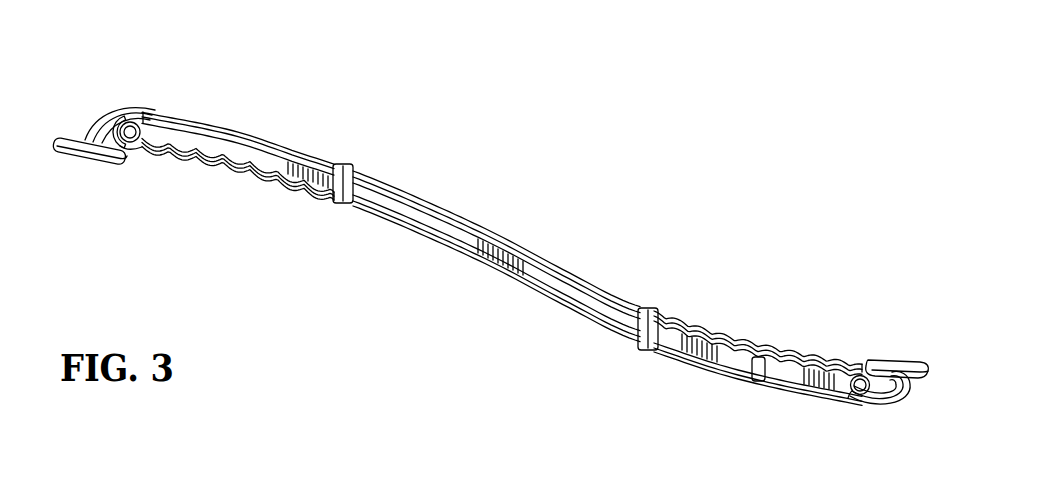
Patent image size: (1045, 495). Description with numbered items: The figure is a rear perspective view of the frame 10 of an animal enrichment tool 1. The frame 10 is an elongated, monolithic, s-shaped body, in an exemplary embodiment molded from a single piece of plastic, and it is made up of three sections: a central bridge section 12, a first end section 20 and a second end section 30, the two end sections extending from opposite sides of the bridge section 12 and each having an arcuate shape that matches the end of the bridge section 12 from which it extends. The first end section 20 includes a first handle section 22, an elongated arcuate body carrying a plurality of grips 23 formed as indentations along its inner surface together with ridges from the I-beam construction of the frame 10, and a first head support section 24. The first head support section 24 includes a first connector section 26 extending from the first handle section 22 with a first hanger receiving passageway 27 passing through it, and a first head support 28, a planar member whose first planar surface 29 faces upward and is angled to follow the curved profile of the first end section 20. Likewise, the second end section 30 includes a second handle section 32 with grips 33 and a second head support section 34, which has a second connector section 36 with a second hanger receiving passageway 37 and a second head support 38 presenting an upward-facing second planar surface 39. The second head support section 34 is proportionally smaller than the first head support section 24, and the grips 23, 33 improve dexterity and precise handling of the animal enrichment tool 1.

The animal enrichment tool 1 is at (420, 112).
The frame 10 is at (500, 247).
The bridge section 12 is at (443, 243).
The first end section 20 is at (205, 118).
The first handle section 22 is at (292, 149).
The grips 23 is at (240, 170).
The first head support section 24 is at (96, 109).
The first connector section 26 is at (118, 108).
The first hanger receiving passageway 27 is at (133, 153).
The first head support 28 is at (63, 153).
The first planar surface 29 is at (87, 162).
The second end section 30 is at (742, 382).
The second handle section 32 is at (673, 362).
The grips 33 is at (727, 340).
The second head support section 34 is at (882, 406).
The second connector section 36 is at (908, 400).
The second hanger receiving passageway 37 is at (850, 404).
The second head support 38 is at (861, 375).
The second planar surface 39 is at (893, 362).